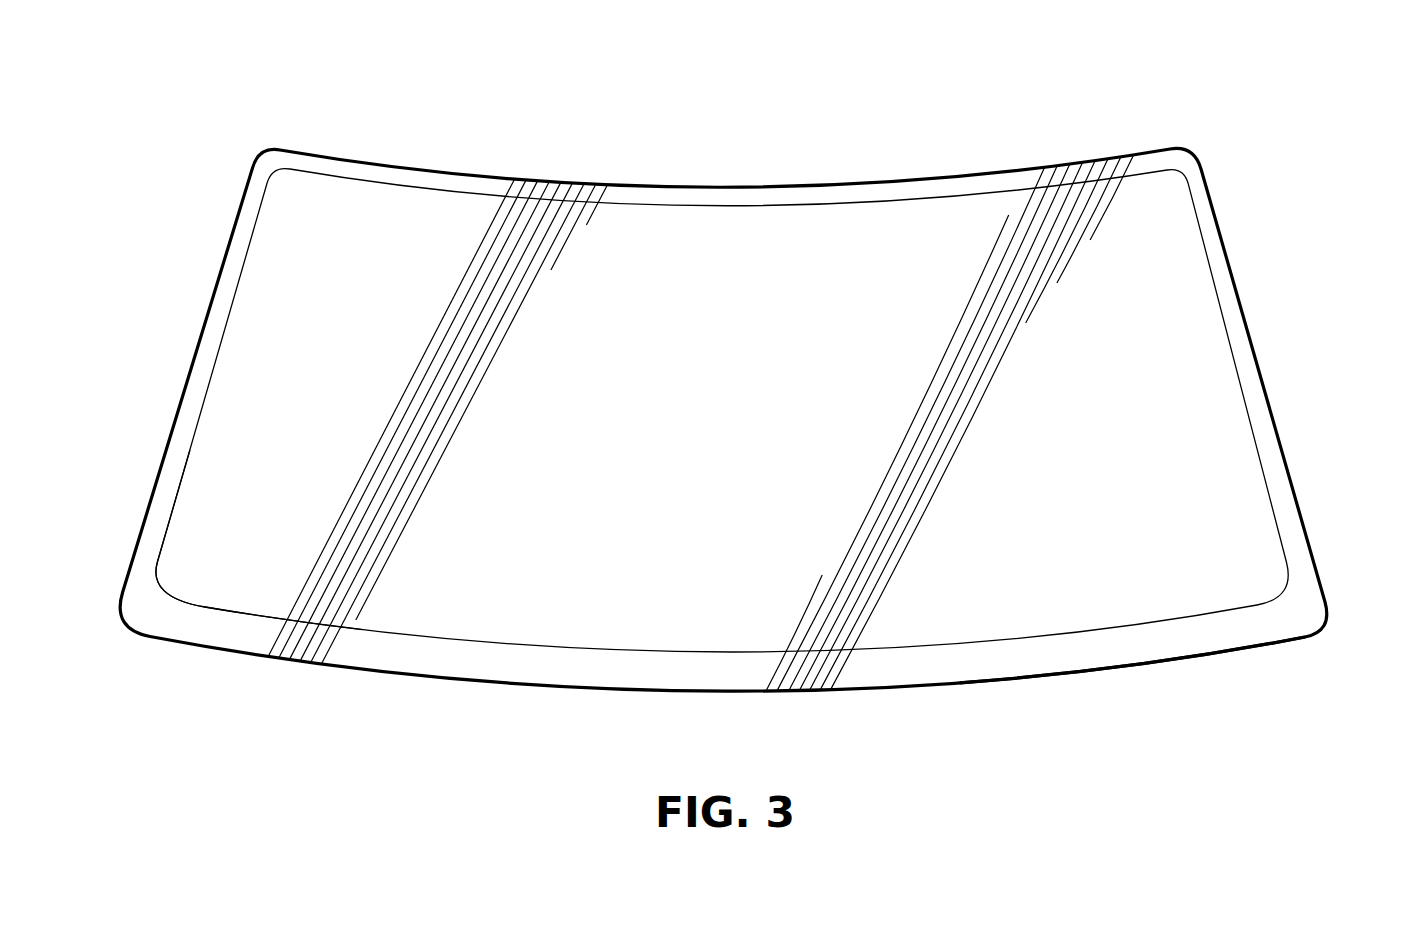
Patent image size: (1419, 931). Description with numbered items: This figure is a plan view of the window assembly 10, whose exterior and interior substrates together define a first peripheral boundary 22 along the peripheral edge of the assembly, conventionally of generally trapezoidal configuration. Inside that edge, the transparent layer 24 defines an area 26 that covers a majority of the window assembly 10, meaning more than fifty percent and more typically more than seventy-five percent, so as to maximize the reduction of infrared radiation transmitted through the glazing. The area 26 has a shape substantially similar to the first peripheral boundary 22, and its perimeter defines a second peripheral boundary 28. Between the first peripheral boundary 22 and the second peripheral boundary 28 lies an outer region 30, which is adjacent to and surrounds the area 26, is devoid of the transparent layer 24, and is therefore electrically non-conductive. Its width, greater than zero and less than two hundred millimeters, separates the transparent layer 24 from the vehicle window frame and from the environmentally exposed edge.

The window assembly 10 is at (735, 413).
The first peripheral boundary 22 is at (724, 186).
The transparent layer 24 is at (238, 591).
The area 26 is at (865, 283).
The second peripheral boundary 28 is at (793, 203).
The outer region 30 is at (1133, 647).